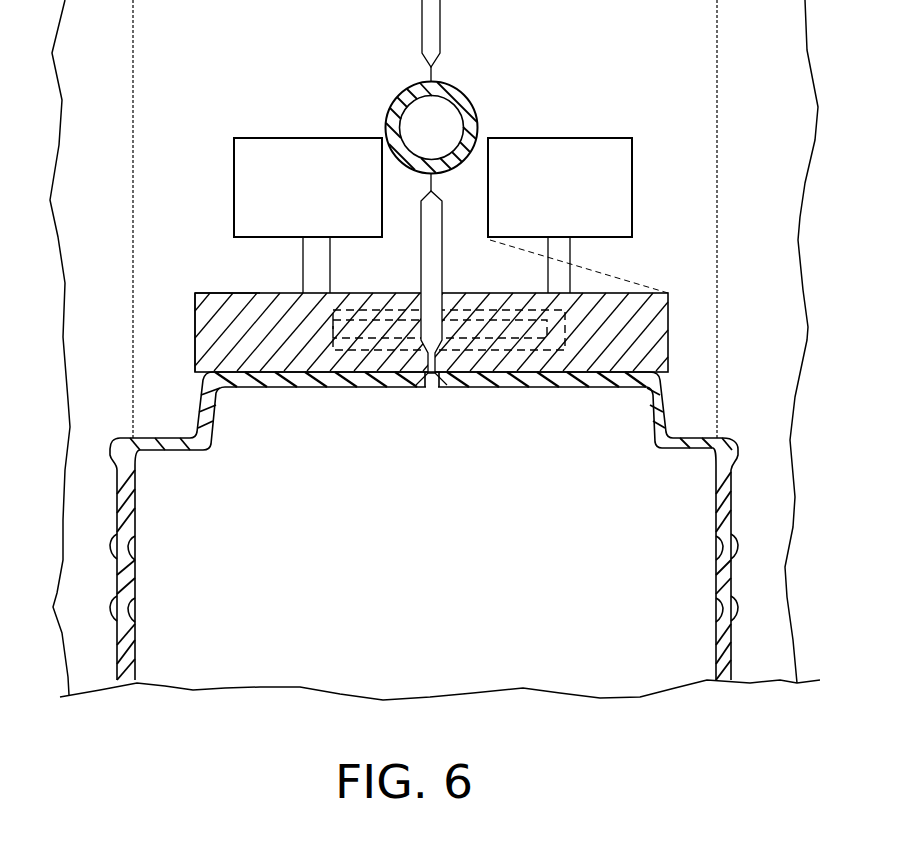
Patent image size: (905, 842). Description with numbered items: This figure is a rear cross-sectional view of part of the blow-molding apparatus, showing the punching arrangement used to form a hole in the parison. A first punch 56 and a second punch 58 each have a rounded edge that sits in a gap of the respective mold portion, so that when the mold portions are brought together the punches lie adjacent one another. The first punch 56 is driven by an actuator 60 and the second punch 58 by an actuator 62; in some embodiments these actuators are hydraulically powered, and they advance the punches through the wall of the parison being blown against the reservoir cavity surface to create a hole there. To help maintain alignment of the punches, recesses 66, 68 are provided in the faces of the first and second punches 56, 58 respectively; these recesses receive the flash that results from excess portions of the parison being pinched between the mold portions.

The first punch 56 is at (668, 352).
The second punch 58 is at (192, 317).
The actuator 60 is at (632, 152).
The actuator 62 is at (270, 137).
The recess 66 is at (442, 354).
The recess 68 is at (427, 353).